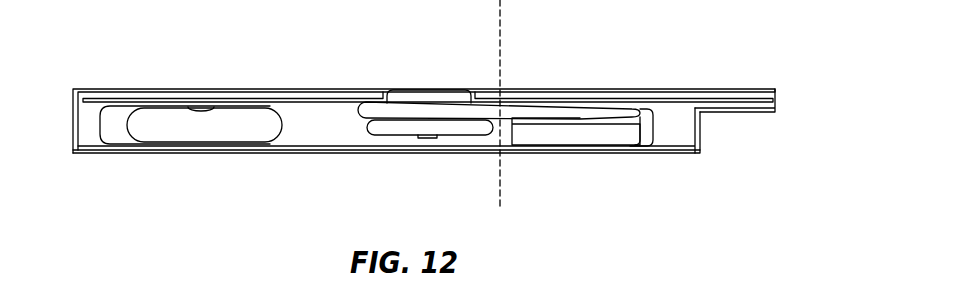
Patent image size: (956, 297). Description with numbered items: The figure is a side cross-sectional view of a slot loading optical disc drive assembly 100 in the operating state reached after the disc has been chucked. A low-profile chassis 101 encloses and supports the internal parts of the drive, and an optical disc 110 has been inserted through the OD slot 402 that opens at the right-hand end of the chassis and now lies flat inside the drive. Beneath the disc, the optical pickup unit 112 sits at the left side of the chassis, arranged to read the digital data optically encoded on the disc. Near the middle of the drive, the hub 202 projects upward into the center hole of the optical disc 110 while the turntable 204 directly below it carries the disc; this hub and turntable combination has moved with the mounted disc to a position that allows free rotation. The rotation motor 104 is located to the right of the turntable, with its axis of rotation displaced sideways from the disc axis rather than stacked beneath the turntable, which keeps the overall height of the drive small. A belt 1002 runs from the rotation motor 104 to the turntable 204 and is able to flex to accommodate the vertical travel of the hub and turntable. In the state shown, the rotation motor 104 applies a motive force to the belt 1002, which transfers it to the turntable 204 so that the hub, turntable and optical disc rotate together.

The slot loading optical disc drive assembly 100 is at (703, 127).
The chassis 101 is at (96, 153).
The rotation motor 104 is at (597, 138).
The optical disc 110 is at (92, 92).
The optical pickup unit 112 is at (191, 125).
The hub 202 is at (440, 95).
The turntable 204 is at (438, 127).
The OD slot 402 is at (778, 99).
The belt 1002 is at (530, 118).